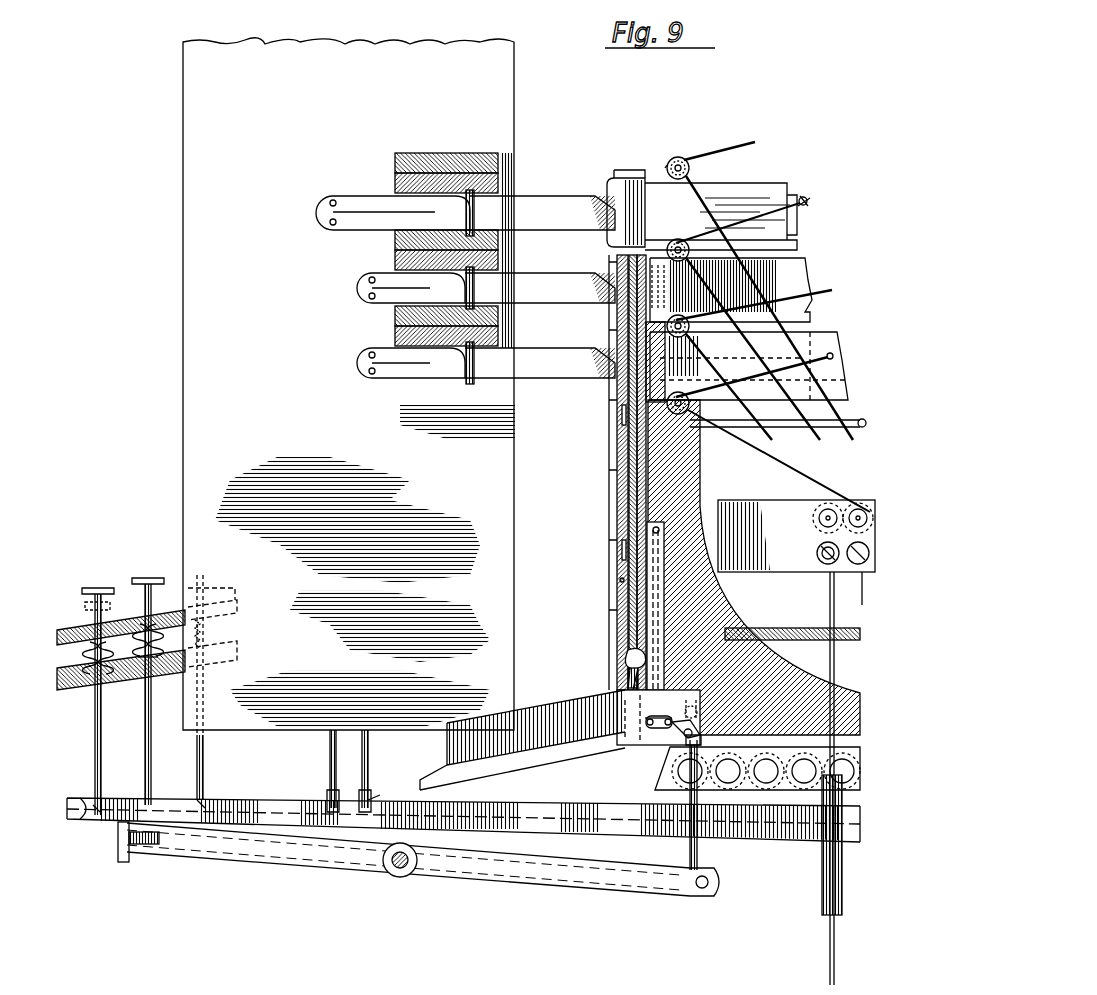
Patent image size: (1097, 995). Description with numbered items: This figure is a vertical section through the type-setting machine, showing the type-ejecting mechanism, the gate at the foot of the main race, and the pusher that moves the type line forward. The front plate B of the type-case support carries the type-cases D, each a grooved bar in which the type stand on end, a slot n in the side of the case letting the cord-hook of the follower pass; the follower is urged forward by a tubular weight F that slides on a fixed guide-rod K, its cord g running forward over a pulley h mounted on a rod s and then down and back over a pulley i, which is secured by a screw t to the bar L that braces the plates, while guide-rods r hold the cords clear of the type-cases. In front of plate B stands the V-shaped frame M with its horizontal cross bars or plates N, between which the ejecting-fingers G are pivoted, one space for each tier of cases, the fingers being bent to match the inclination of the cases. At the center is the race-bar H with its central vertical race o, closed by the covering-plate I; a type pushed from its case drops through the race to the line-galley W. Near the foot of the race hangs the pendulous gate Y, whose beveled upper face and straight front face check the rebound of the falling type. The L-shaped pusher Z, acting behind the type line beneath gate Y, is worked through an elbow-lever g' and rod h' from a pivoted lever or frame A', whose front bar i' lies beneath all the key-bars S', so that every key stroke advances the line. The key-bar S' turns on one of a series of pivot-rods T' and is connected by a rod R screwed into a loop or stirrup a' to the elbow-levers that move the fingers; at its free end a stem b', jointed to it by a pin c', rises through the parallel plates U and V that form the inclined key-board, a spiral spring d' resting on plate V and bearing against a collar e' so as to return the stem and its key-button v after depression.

The V-shaped frame M is at (349, 384).
The horizontal cross bars or plates N is at (439, 280).
The ejecting-finger G is at (465, 287).
The race-bar H is at (609, 472).
The front plate B is at (628, 465).
The covering-plate I is at (617, 519).
The central race o is at (618, 580).
The pulley h is at (648, 193).
The rod s is at (682, 162).
The cord g is at (777, 322).
The type-case D is at (721, 216).
The pulley i is at (772, 387).
The slot n is at (690, 410).
The guide-rod r is at (778, 414).
The gravitating gate Y is at (620, 660).
The bar L is at (796, 552).
The screw t is at (815, 552).
The guide-rod K is at (828, 656).
The weight F is at (830, 778).
The pusher Z is at (640, 725).
The collar e' is at (378, 703).
The spiral spring d' is at (137, 657).
The elbow-lever g' is at (675, 739).
The line-galley W is at (545, 786).
The pivot-rod T' is at (757, 792).
The key-bar S' is at (463, 820).
The lever A' is at (423, 866).
The rod h' is at (705, 802).
The front-bar i' is at (131, 842).
The rivet or pin c' is at (150, 803).
The upper plate U is at (144, 616).
The lower plate V is at (142, 665).
The key-button v is at (122, 685).
The stem b' is at (146, 687).
The rod R is at (335, 771).
The loop or stirrup a' is at (379, 792).